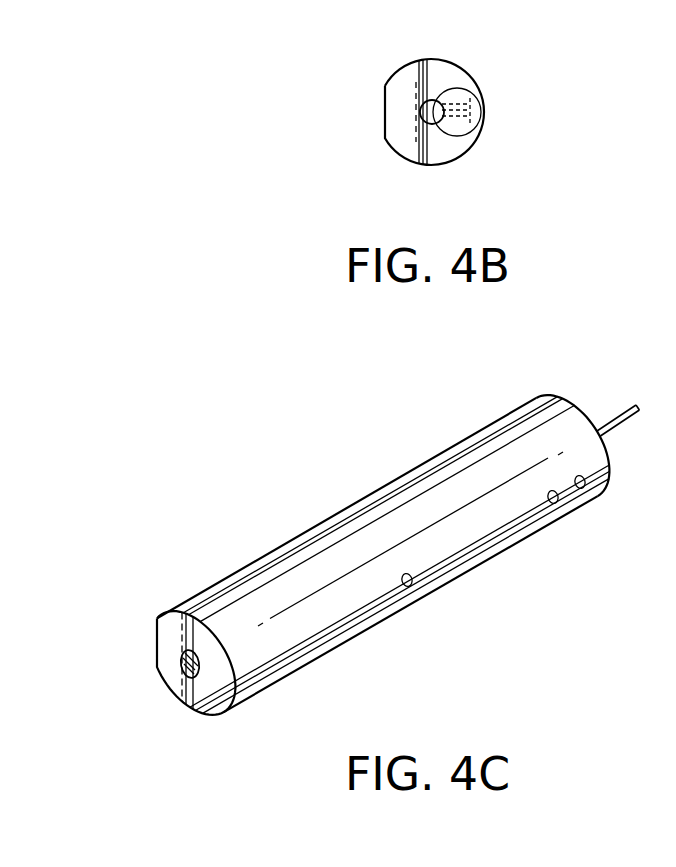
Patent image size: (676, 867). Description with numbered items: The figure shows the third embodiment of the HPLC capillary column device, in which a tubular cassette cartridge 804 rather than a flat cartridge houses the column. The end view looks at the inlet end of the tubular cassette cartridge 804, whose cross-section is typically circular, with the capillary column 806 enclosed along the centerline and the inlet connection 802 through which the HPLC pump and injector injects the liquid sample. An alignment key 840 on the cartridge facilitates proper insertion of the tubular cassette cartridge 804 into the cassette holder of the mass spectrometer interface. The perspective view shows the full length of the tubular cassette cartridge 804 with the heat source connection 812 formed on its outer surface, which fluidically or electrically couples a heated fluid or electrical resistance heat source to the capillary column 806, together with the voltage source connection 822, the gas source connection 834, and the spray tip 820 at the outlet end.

In FIG. 4B, the alignment key 840 is at (385, 118).
In FIG. 4B, the tubular cassette cartridge 804 is at (437, 60).
In FIG. 4C, the tubular cassette cartridge 804 is at (291, 640).
In FIG. 4B, the inlet connection 802 is at (481, 98).
In FIG. 4B, the capillary column 806 is at (473, 138).
In FIG. 4C, the capillary column 806 is at (182, 672).
In FIG. 4C, the heat source connection 812 is at (410, 589).
In FIG. 4C, the spray tip 820 is at (614, 418).
In FIG. 4C, the voltage source connection 822 is at (556, 504).
In FIG. 4C, the gas source connection 834 is at (584, 489).